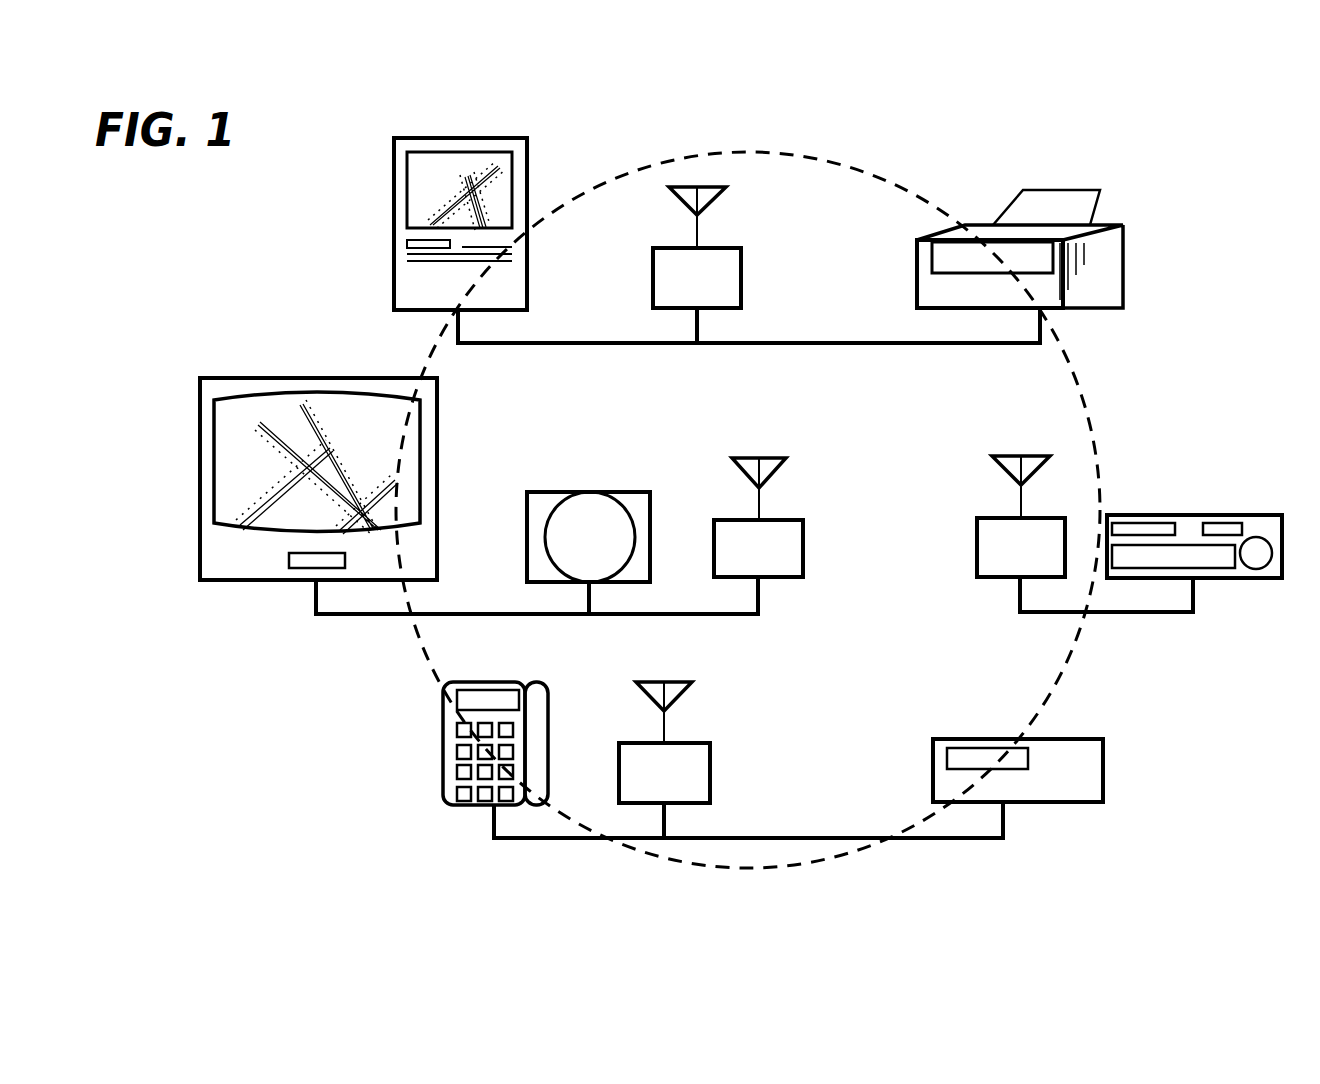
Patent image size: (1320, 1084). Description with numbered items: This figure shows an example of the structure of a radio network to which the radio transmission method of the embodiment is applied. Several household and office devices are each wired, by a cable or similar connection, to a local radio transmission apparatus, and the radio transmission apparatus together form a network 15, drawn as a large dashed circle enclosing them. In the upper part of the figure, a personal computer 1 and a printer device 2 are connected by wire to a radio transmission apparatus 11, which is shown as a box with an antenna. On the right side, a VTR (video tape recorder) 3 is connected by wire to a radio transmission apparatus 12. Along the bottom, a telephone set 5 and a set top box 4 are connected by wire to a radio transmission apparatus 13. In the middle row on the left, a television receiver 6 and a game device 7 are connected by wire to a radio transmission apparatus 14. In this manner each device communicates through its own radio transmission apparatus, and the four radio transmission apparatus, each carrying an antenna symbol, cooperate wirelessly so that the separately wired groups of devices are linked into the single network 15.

The personal computer 1 is at (446, 138).
The printer device 2 is at (980, 224).
The VTR (video tape recorder) 3 is at (1192, 514).
The set top box 4 is at (1068, 738).
The telephone set 5 is at (452, 808).
The television receiver 6 is at (238, 582).
The game device 7 is at (547, 491).
The radio transmission apparatus 11 is at (743, 288).
The radio transmission apparatus 12 is at (975, 536).
The radio transmission apparatus 13 is at (698, 746).
The radio transmission apparatus 14 is at (782, 522).
The network 15 is at (875, 176).